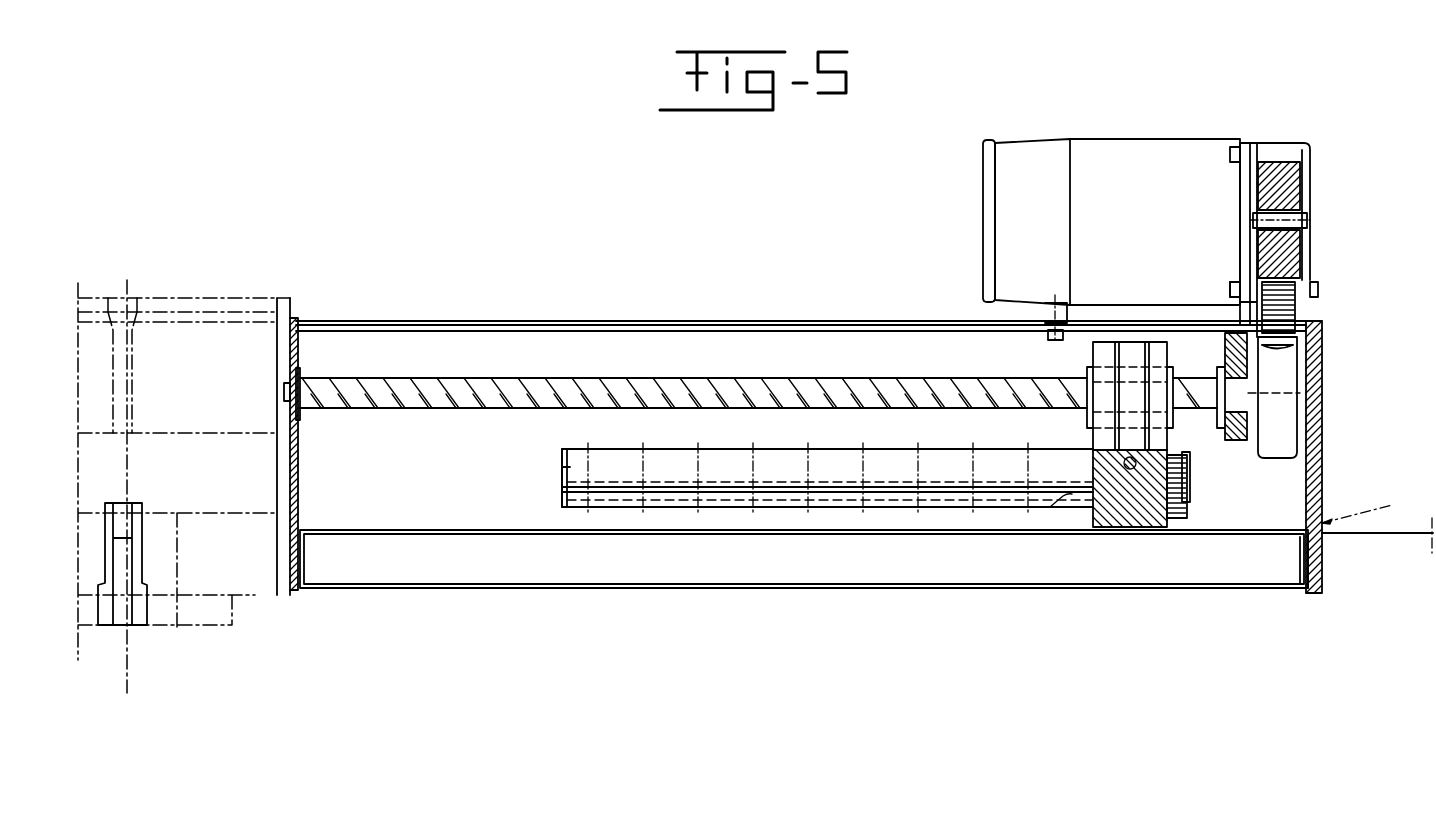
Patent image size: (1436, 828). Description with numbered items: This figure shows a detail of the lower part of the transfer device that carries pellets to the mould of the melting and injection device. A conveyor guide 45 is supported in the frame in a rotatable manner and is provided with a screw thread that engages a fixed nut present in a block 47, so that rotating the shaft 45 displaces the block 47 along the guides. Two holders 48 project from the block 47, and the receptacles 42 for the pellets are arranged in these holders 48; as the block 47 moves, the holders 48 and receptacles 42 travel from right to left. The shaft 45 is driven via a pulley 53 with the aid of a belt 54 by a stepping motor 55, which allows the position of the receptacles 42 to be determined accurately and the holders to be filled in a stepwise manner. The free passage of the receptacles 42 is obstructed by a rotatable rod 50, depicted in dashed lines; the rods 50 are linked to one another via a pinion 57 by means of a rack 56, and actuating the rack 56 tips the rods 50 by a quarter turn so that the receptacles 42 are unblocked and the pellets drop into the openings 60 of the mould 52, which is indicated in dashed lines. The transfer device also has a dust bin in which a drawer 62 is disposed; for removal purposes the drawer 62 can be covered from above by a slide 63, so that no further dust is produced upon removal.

The receptacle 42 is at (748, 449).
The conveyor guide 45 is at (628, 388).
The block 47 is at (1105, 355).
The holder 48 is at (562, 467).
The rotatable rod 50 is at (1050, 507).
The mould 52 is at (157, 633).
The pulley 53 is at (1293, 370).
The belt 54 is at (1300, 312).
The stepping motor 55 is at (1207, 163).
The rack 56 is at (1190, 458).
The pinion 57 is at (1190, 492).
The opening 60 is at (116, 510).
The drawer 62 is at (1240, 570).
The slide 63 is at (1410, 530).